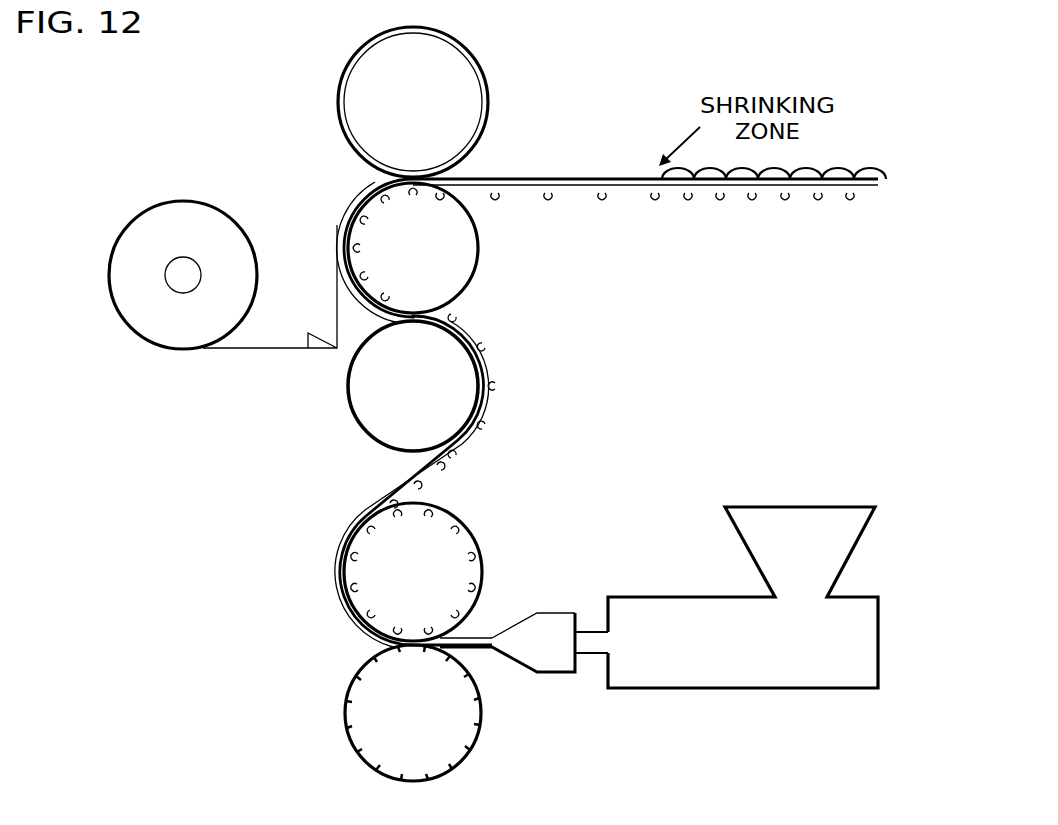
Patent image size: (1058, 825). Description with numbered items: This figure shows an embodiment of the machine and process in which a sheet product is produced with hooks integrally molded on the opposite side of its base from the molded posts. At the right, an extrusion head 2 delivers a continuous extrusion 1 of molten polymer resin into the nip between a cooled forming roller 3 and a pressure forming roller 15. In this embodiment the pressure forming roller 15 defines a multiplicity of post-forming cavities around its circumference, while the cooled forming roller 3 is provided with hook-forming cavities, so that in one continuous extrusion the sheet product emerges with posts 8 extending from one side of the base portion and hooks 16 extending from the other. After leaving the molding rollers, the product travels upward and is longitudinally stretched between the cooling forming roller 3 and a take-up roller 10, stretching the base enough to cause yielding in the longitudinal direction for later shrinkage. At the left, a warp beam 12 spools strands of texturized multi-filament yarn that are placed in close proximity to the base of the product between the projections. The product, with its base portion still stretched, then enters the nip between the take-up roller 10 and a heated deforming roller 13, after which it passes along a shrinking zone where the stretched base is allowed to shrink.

The continuous extrusion 1 is at (463, 637).
The extrusion head 2 is at (547, 673).
The cooled forming roller 3 is at (421, 587).
The posts 8 is at (400, 482).
The take-up roller 10 is at (429, 261).
The warp beam 12 is at (148, 212).
The heated deforming roller 13 is at (430, 97).
The pressure forming roller 15 is at (430, 717).
The hooks 16 is at (487, 355).